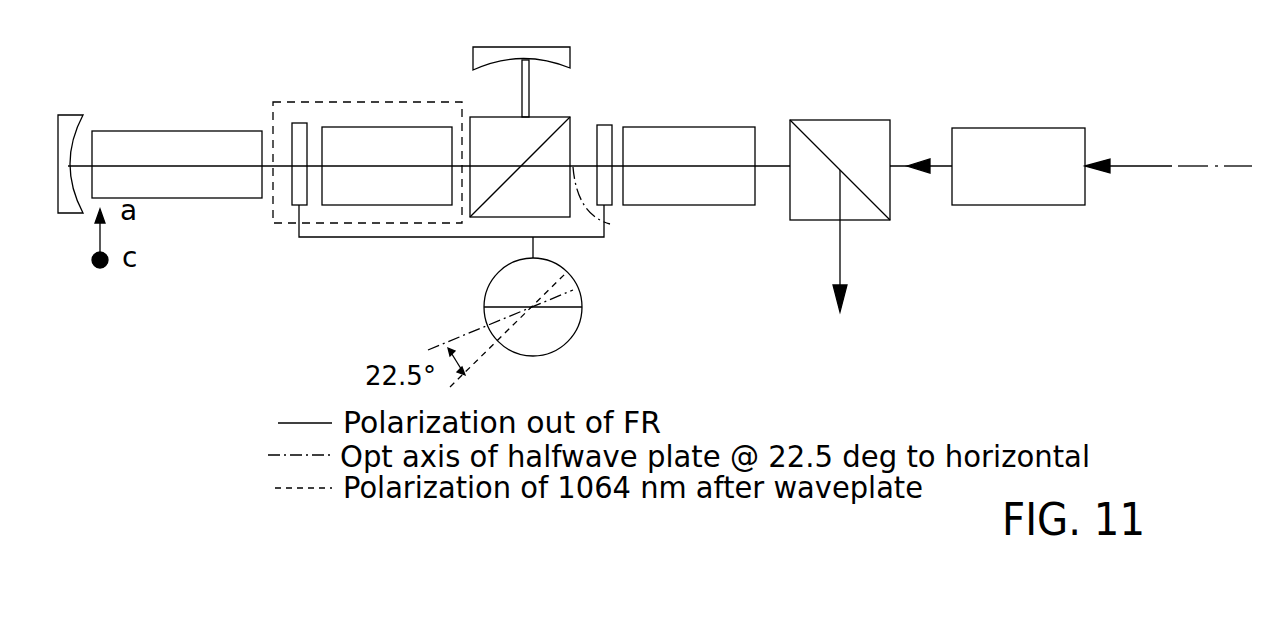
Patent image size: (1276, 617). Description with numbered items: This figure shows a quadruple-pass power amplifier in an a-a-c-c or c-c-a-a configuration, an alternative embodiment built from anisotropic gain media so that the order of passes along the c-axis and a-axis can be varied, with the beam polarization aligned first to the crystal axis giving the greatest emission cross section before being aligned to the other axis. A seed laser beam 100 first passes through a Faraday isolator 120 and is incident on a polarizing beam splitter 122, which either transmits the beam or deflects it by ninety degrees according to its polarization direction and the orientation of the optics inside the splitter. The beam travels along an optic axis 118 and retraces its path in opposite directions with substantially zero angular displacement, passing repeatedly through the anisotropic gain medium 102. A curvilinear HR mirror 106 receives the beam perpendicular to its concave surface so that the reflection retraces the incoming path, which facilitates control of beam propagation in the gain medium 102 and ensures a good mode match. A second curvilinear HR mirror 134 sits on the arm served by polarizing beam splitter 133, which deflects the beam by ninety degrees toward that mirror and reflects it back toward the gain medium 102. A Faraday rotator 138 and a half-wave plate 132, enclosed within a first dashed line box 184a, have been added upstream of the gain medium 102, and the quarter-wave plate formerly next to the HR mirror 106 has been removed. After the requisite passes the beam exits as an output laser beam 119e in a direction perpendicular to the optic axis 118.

The seed laser beam 100 is at (1147, 168).
The anisotropic gain medium 102 is at (222, 147).
The curvilinear HR mirror 106 is at (72, 128).
The optic axis 118 is at (610, 224).
The output laser beam 119e is at (838, 260).
The Faraday isolator 120 is at (1003, 135).
The polarizing beam splitter 122 is at (845, 133).
The half-wave plate 132 is at (300, 140).
The polarizing beam splitter 133 is at (531, 127).
The second curvilinear HR mirror 134 is at (553, 52).
The Faraday rotator 138 is at (385, 205).
The first dashed line box 184a is at (387, 98).